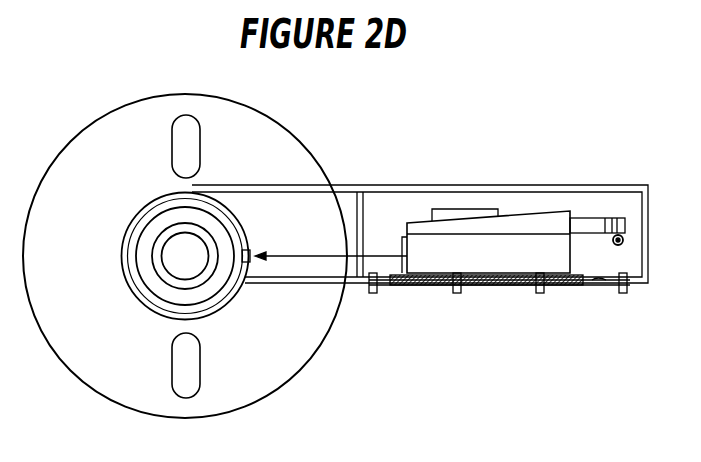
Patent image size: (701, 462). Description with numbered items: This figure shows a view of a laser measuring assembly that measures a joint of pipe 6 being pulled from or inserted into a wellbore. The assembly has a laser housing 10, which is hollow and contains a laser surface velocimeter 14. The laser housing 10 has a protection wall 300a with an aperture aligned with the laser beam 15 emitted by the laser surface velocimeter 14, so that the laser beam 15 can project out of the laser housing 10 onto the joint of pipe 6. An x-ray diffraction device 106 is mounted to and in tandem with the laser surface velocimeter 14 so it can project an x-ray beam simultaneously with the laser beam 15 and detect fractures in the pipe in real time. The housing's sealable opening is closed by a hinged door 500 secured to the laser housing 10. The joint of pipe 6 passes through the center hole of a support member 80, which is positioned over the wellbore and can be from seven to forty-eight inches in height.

The joint of pipe 6 is at (168, 229).
The support member 80 is at (221, 300).
The laser housing 10 is at (537, 186).
The protection wall 300a is at (364, 221).
The laser beam 15 is at (303, 255).
The x-ray diffraction device 106 is at (463, 209).
The laser surface velocimeter 14 is at (570, 258).
The hinged door 500 is at (497, 286).